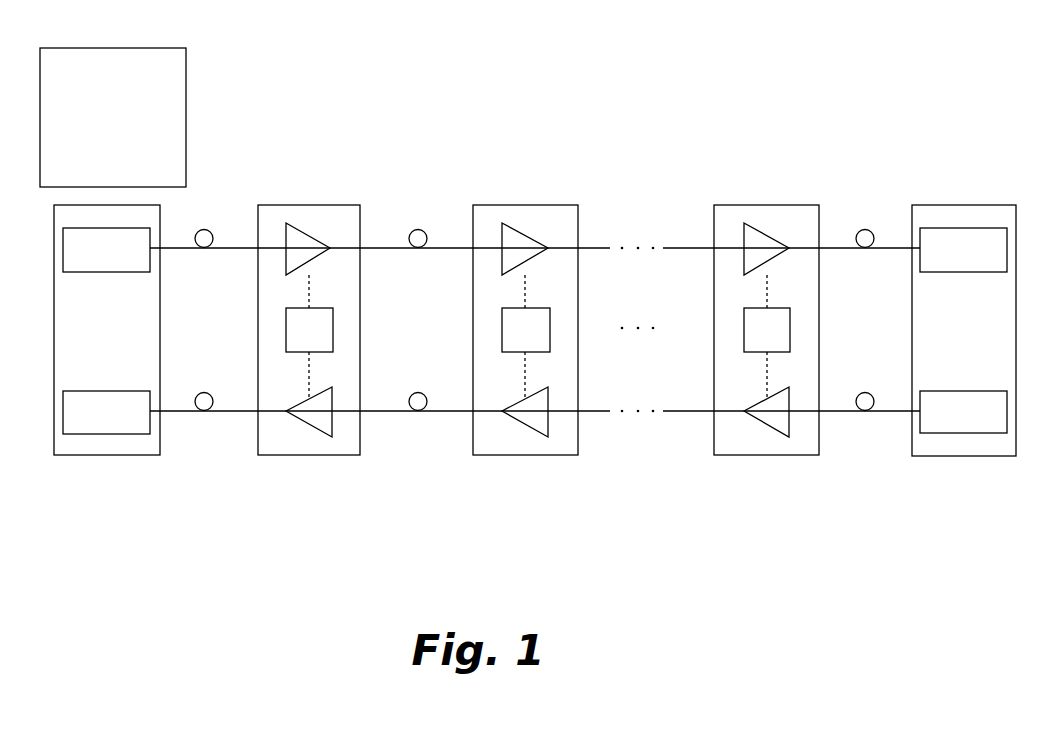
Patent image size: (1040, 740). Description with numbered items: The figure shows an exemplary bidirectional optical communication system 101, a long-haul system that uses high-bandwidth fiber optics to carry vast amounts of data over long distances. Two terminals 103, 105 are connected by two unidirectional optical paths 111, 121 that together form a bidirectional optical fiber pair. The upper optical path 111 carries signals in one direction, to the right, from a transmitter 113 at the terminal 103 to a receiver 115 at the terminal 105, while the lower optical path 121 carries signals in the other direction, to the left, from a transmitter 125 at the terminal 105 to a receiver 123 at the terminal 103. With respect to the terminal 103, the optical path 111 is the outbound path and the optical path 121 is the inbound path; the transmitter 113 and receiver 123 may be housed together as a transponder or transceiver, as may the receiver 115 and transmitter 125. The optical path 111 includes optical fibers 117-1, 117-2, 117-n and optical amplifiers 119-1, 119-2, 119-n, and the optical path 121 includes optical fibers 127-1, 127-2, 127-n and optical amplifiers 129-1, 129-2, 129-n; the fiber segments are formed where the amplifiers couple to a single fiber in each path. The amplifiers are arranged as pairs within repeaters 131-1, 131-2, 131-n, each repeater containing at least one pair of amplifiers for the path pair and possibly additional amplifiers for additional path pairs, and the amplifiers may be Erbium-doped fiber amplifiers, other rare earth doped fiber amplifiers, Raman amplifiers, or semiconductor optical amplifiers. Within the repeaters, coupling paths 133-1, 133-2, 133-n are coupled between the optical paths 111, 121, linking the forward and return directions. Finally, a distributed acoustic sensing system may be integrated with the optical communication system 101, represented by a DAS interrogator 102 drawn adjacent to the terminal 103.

The bidirectional optical communication system 101 is at (508, 582).
The DAS interrogator 102 is at (113, 117).
The terminal 103 is at (107, 330).
The terminal 105 is at (964, 330).
The optical path 111 is at (409, 180).
The transmitter 113 is at (106, 250).
The receiver 115 is at (963, 250).
The optical fiber 117-1 is at (183, 250).
The optical fiber 117-2 is at (396, 250).
The optical fiber 117-n is at (843, 250).
The optical amplifier 119-1 is at (308, 249).
The optical amplifier 119-2 is at (525, 249).
The optical amplifier 119-n is at (766, 249).
The optical path 121 is at (403, 485).
The receiver 123 is at (106, 412).
The transmitter 125 is at (963, 412).
The optical fiber 127-1 is at (191, 413).
The optical fiber 127-2 is at (396, 413).
The optical fiber 127-n is at (843, 413).
The optical amplifier 129-1 is at (309, 412).
The optical amplifier 129-2 is at (525, 412).
The optical amplifier 129-n is at (766, 412).
The repeater 131-1 is at (309, 330).
The repeater 131-2 is at (525, 330).
The repeater 131-n is at (766, 330).
The coupling path 133-1 is at (309, 337).
The coupling path 133-2 is at (526, 337).
The coupling path 133-n is at (767, 337).